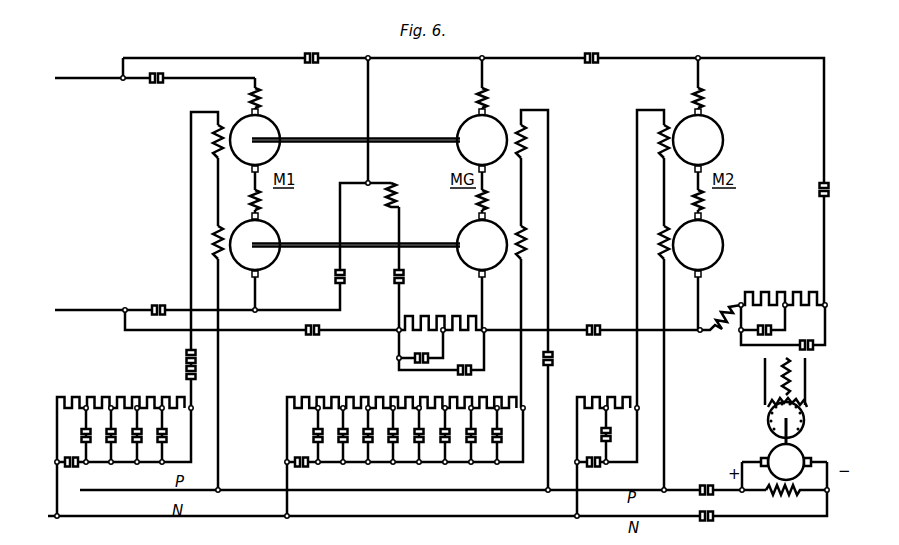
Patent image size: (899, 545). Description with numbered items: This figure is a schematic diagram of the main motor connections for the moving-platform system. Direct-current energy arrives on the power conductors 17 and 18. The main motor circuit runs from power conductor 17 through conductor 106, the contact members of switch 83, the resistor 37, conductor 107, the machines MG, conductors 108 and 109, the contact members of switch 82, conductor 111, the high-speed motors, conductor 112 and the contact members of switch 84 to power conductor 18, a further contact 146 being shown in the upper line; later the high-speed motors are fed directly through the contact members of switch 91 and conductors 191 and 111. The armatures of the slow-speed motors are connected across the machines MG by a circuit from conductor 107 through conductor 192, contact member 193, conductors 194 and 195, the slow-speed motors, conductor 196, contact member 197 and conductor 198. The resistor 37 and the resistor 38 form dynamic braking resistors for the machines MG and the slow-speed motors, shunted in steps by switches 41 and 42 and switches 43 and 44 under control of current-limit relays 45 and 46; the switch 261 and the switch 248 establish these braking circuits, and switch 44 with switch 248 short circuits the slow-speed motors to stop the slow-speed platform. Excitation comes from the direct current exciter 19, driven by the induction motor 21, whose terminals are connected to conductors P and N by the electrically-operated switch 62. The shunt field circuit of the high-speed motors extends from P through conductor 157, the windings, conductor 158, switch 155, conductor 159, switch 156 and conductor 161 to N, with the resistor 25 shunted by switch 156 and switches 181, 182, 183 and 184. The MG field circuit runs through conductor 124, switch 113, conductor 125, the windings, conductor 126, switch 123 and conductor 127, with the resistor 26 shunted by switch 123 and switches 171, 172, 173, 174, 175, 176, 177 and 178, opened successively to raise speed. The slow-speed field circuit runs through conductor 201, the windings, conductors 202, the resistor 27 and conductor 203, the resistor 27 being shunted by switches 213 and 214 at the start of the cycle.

The power conductor 18 is at (90, 74).
The switch 84 is at (163, 84).
The conductor 112 is at (221, 80).
The contact 146 is at (316, 63).
The conductor 108 is at (445, 61).
The conductor 109 is at (368, 108).
The conductor 198 is at (553, 61).
The contact member 197 is at (597, 61).
The conductor 196 is at (626, 58).
The current-limit relay 45 is at (400, 192).
The conductor 125 is at (549, 198).
The switch 248 is at (818, 189).
The conductor 158 is at (190, 251).
The conductors 202 is at (636, 245).
The switch 82 is at (334, 276).
The switch 261 is at (405, 274).
The resistor 38 is at (790, 289).
The power conductor 17 is at (90, 306).
The switch 91 is at (156, 305).
The conductor 191 is at (228, 309).
The conductor 111 is at (271, 309).
The resistor 37 is at (446, 313).
The conductor 107 is at (485, 313).
The conductor 192 is at (565, 318).
The contact member 193 is at (599, 320).
The conductor 194 is at (603, 333).
The conductor 195 is at (697, 310).
The switch 43 is at (769, 326).
The switch 44 is at (808, 338).
The switch 155 is at (186, 357).
The conductor 106 is at (242, 335).
The switch 83 is at (312, 337).
The switch 41 is at (425, 347).
The switch 42 is at (471, 348).
The conductor 126 is at (520, 359).
The current-limit relay 46 is at (712, 335).
The switch 113 is at (553, 363).
The conductor 159 is at (187, 370).
The conductor 157 is at (222, 381).
The conductor 201 is at (667, 390).
The resistor 25 is at (129, 396).
The switch 156 is at (74, 466).
The conductor 161 is at (58, 501).
The switch 181 is at (80, 436).
The switch 182 is at (106, 437).
The switch 183 is at (132, 437).
The switch 184 is at (156, 439).
The resistor 26 is at (374, 396).
The switch 123 is at (300, 466).
The conductor 127 is at (286, 501).
The contact 171 is at (312, 437).
The switch 172 is at (337, 437).
The contact 173 is at (363, 437).
The switch 174 is at (388, 437).
The contact 175 is at (414, 437).
The switch 176 is at (440, 437).
The contact 177 is at (466, 437).
The switch 178 is at (492, 437).
The conductor 124 is at (548, 444).
The resistor 27 is at (612, 396).
The switch 213 is at (612, 434).
The switch 214 is at (595, 466).
The conductor 203 is at (577, 501).
The induction motor 21 is at (766, 422).
The direct current exciter 19 is at (767, 452).
The electrically-operated switch 62 is at (698, 511).